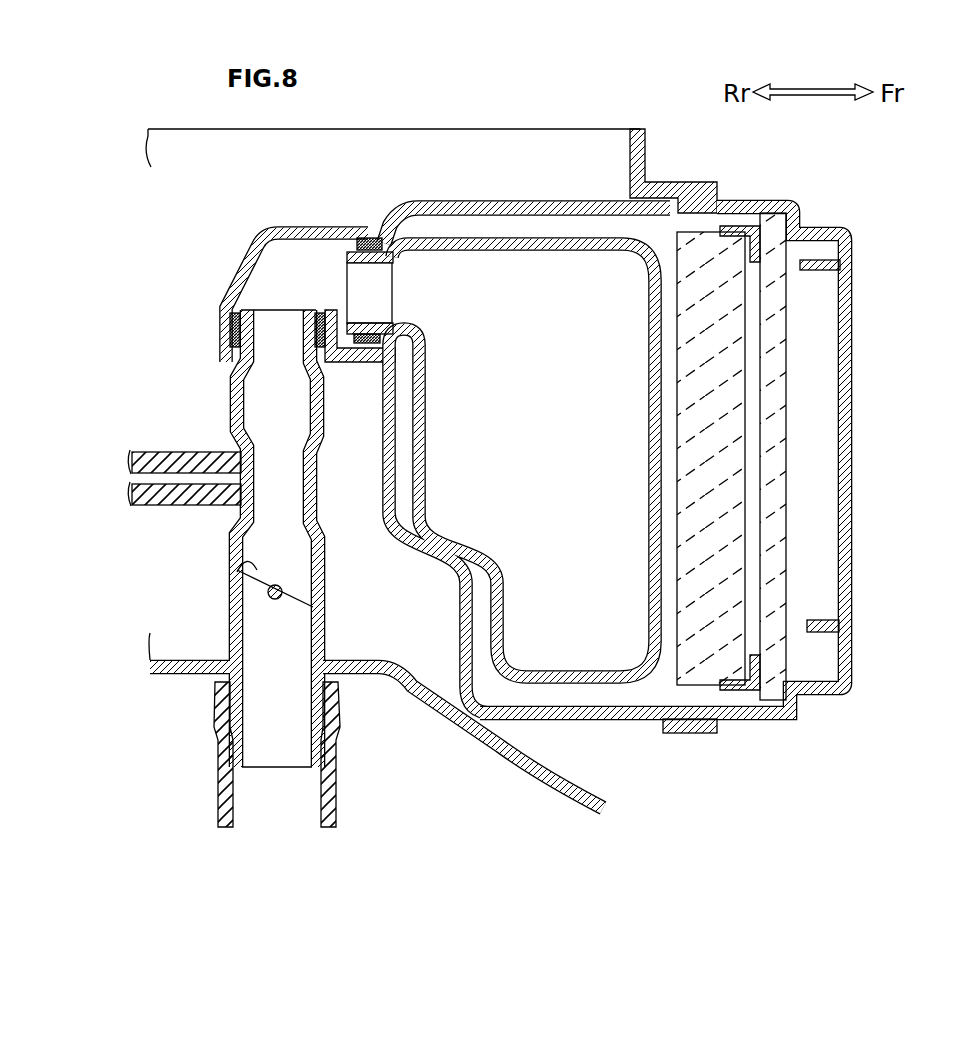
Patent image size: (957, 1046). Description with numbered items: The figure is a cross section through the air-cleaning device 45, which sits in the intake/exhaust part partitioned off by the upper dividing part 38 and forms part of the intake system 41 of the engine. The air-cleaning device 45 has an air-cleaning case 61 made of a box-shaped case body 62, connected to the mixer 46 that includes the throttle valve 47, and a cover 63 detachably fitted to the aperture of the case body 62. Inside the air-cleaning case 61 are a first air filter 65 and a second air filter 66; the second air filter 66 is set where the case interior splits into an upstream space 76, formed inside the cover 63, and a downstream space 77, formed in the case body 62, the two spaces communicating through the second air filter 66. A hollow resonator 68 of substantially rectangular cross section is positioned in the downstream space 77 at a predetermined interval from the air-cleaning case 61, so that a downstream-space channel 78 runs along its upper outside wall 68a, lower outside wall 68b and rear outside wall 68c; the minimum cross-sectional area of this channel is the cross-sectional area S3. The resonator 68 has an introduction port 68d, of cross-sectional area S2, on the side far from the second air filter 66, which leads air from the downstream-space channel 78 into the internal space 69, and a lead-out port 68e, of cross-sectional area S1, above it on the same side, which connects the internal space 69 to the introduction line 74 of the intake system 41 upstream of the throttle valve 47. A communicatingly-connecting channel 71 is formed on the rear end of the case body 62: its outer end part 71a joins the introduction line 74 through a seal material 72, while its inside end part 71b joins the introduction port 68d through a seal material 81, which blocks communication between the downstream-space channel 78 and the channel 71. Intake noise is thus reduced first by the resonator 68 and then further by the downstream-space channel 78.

The upper dividing part 38 is at (150, 633).
The intake system 41 is at (200, 183).
The air-cleaning device 45 is at (487, 200).
The mixer 46 is at (220, 452).
The throttle valve 47 is at (227, 570).
The air-cleaning case 61 is at (780, 805).
The case body 62 is at (620, 722).
The cover 63 is at (757, 720).
The first air filter 65 is at (780, 357).
The second air filter 66 is at (740, 450).
The hollow resonator 68 is at (587, 242).
The upper outside wall 68a is at (440, 240).
The lower outside wall 68b is at (598, 686).
The rear outside wall 68c is at (460, 550).
The introduction port 68d is at (420, 447).
The lead-out port 68e is at (363, 257).
The internal space 69 is at (548, 437).
The communicatingly-connecting channel 71 is at (243, 257).
The outer end part 71a is at (217, 337).
The inside end part 71b is at (363, 240).
The seal material 72 is at (227, 303).
The introduction line 74 is at (230, 533).
The upstream space 76 is at (810, 503).
The downstream space 77 is at (540, 218).
The downstream-space channel 78 is at (467, 232).
The seal material 81 is at (393, 254).
The cross-sectional area S1 is at (363, 292).
The cross-sectional area S2 is at (410, 487).
The cross-sectional area S3 is at (508, 226).